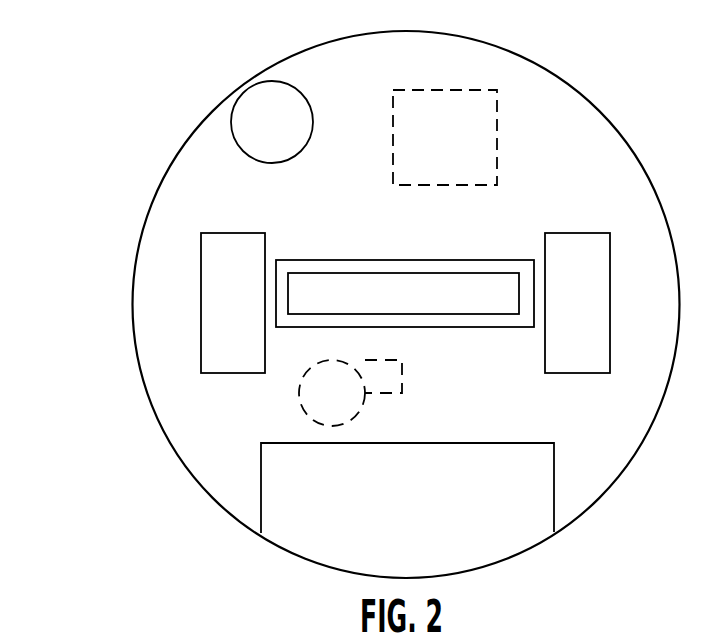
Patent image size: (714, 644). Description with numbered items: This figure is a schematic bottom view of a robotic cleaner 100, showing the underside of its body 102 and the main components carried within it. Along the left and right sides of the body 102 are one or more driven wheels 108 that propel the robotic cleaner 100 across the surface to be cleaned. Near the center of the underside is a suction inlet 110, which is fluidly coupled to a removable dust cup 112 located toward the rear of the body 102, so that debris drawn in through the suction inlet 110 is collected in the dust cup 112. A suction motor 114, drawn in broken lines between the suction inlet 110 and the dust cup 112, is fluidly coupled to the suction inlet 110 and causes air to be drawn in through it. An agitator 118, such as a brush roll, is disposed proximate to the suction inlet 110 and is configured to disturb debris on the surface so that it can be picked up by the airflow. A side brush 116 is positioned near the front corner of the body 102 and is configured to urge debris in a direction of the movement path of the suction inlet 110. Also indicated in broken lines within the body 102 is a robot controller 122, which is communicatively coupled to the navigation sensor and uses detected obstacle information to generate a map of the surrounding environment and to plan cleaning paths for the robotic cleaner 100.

The robotic cleaner 100 is at (62, 106).
The body 102 is at (163, 180).
The driven wheels 108 is at (233, 232).
The suction inlet 110 is at (365, 260).
The removable dust cup 112 is at (497, 443).
The suction motor 114 is at (299, 396).
The side brush 116 is at (313, 126).
The agitator 118 is at (495, 274).
The robot controller 122 is at (499, 131).